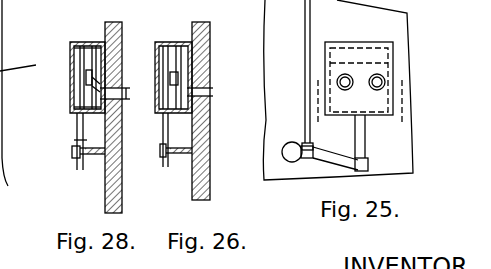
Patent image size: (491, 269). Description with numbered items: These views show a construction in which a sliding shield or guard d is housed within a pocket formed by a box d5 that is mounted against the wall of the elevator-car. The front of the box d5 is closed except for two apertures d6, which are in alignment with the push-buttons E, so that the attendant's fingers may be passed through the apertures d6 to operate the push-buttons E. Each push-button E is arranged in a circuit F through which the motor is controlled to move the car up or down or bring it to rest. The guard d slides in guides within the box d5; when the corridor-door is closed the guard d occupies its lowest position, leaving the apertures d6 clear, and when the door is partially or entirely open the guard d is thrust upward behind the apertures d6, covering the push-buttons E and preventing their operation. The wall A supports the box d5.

In FIG. 28, the guard d is at (70, 103).
In FIG. 26, the guard d is at (156, 101).
In FIG. 28, the box d5 is at (89, 42).
In FIG. 25, the box d5 is at (373, 103).
In FIG. 28, the apertures d6 is at (72, 76).
In FIG. 28, the push-buttons E is at (117, 43).
In FIG. 26, the push-buttons E is at (174, 77).
In FIG. 25, the push-buttons E is at (383, 80).
In FIG. 28, the circuit F is at (108, 93).
In FIG. 26, the wall A is at (208, 133).